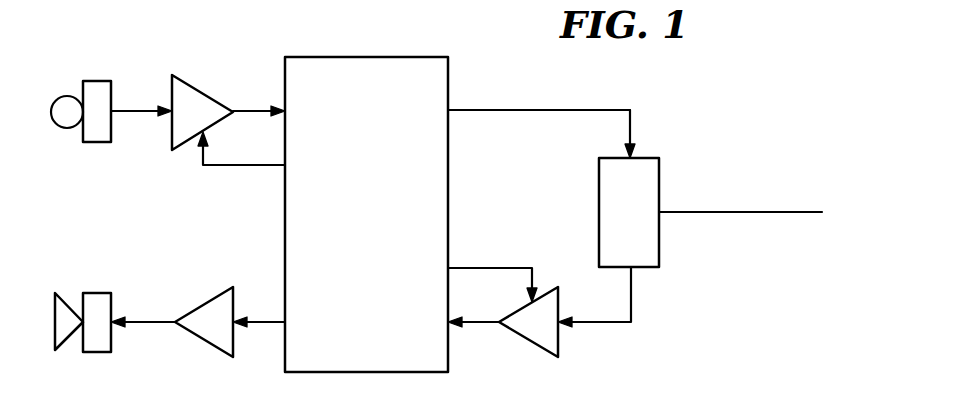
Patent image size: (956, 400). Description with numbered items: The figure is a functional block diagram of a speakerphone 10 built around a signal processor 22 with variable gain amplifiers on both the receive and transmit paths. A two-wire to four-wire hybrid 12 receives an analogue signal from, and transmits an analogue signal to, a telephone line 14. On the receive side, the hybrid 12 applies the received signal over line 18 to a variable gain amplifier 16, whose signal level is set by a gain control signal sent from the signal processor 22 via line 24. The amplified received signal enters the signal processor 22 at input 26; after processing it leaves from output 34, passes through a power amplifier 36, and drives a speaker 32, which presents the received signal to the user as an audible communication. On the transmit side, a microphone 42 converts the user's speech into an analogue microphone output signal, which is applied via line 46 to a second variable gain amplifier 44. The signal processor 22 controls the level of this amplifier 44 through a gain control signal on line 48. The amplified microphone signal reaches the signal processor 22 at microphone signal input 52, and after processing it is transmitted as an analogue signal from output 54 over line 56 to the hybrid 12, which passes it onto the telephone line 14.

The speakerphone 10 is at (672, 325).
The two-wire to four-wire hybrid 12 is at (648, 228).
The telephone line 14 is at (732, 213).
The variable gain amplifier 16 is at (539, 343).
The line 18 is at (633, 290).
The signal processor 22 is at (388, 167).
The line 24 is at (491, 268).
The input 26 is at (456, 326).
The speaker 32 is at (83, 302).
The output 34 is at (280, 326).
The power amplifier 36 is at (198, 306).
The microphone 42 is at (70, 128).
The variable gain amplifier 44 is at (201, 93).
The line 46 is at (125, 110).
The line 48 is at (241, 168).
The microphone signal input 52 is at (280, 110).
The output 54 is at (464, 110).
The line 56 is at (636, 136).